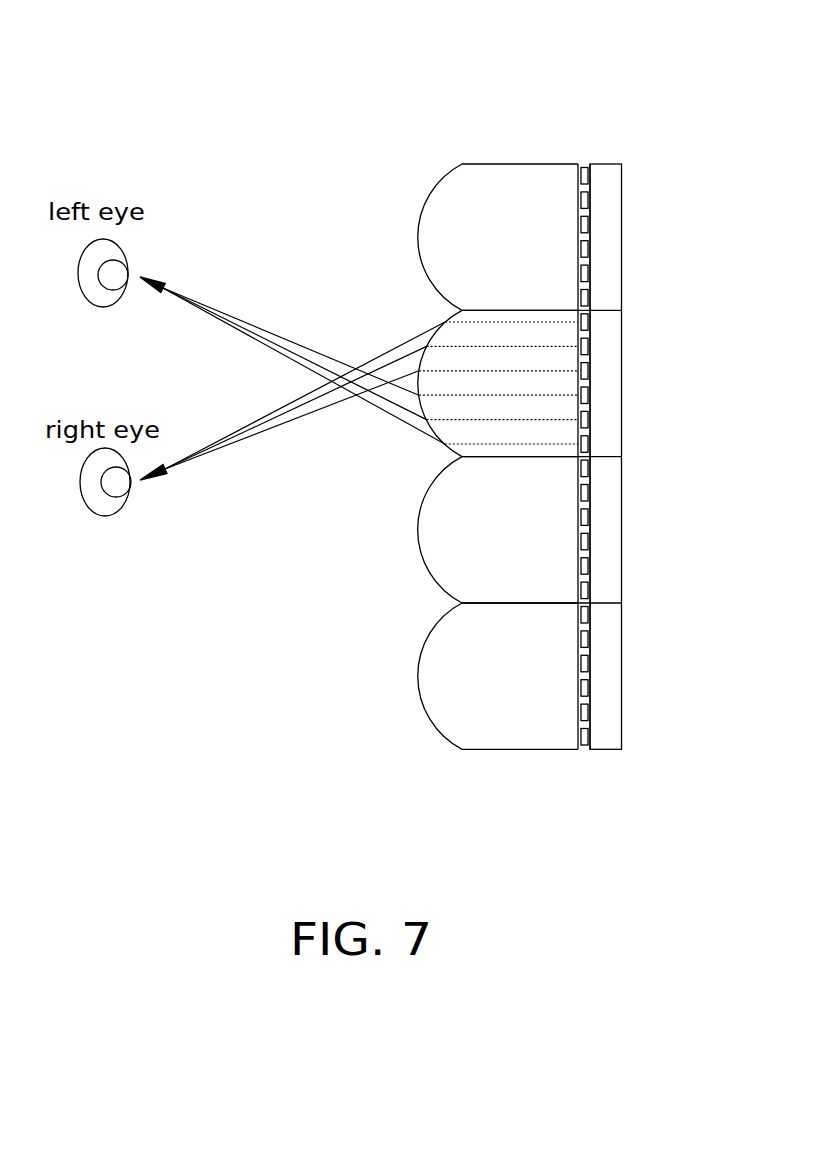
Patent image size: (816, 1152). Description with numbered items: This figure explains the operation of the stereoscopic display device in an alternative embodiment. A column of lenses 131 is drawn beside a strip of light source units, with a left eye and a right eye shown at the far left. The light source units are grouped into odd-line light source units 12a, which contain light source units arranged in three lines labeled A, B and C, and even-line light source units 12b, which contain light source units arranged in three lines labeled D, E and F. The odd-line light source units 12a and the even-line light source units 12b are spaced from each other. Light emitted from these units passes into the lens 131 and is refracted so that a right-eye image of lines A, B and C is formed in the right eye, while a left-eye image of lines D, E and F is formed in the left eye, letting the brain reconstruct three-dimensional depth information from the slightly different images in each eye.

The lens 131 is at (530, 193).
The odd-line light source units 12a is at (627, 312).
The even-line light source units 12b is at (627, 385).